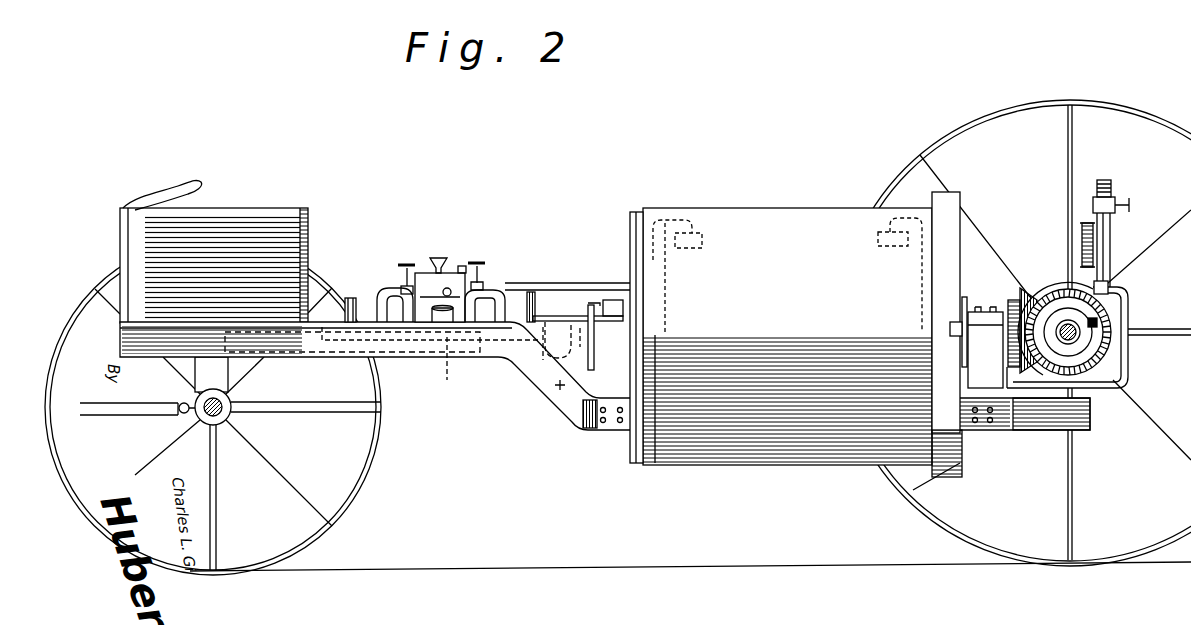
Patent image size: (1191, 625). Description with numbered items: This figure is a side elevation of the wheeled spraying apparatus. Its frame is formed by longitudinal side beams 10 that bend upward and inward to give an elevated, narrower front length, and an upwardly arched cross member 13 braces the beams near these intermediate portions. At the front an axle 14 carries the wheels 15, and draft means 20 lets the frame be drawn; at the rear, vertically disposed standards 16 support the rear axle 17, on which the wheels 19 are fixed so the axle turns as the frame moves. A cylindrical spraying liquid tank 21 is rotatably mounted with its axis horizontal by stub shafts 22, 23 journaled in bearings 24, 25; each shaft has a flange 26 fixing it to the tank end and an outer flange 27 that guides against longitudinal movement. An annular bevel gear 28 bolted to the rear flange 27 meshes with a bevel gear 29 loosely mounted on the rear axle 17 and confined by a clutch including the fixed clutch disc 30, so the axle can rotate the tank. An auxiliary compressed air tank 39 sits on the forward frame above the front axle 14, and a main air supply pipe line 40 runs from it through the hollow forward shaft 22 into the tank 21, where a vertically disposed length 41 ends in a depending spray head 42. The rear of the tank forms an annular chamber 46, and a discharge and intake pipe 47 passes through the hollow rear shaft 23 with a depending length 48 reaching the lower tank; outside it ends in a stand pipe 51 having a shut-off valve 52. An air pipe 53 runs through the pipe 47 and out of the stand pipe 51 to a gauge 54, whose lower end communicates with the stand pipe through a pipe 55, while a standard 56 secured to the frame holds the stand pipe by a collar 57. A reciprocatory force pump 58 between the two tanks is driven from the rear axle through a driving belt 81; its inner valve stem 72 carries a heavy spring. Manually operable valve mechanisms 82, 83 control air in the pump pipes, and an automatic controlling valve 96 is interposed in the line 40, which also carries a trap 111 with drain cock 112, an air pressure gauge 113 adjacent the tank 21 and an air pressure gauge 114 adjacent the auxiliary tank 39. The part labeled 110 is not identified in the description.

The side beam 10 is at (425, 357).
The arched cross member 13 is at (604, 378).
The front axle 14 is at (228, 403).
The front wheels 15 is at (360, 480).
The standards 16 is at (1091, 394).
The rear axle 17 is at (1087, 333).
The rear wheels 19 is at (1133, 112).
The draft means 20 is at (130, 410).
The spraying liquid tank 21 is at (793, 215).
The forward stub shaft 22 is at (612, 300).
The rear stub shaft 23 is at (1018, 313).
The bearing 24 is at (610, 317).
The bearing 25 is at (1014, 300).
The flange 26 is at (626, 330).
The flange 27 is at (588, 307).
The annular bevel gear 28 is at (1030, 300).
The bevel gear 29 is at (1107, 357).
The fixed clutch disc 30 is at (1112, 344).
The auxiliary compressed air tank 39 is at (273, 217).
The main air supply pipe line 40 is at (322, 327).
The vertically disposed length 41 is at (668, 277).
The spray head 42 is at (705, 242).
The annular chamber 46 is at (950, 210).
The discharge and intake pipe 47 is at (1070, 337).
The depending length 48 is at (927, 343).
The stand pipe 51 is at (1102, 233).
The shut-off valve 52 is at (1110, 202).
The air pipe 53 is at (917, 272).
The gauge 54 is at (1087, 232).
The pipe 55 is at (1080, 268).
The standard 56 is at (1124, 376).
The collar 57 is at (1112, 280).
The pump 58 is at (462, 268).
The valve stem 72 is at (962, 440).
The driving belt 81 is at (498, 287).
The valve mechanism 82 is at (397, 288).
The valve mechanism 83 is at (478, 287).
The automatic controlling valve 96 is at (453, 370).
The tank 110 is at (418, 273).
The trap 111 is at (541, 382).
The drain cock 112 is at (543, 384).
The air pressure gauge 113 is at (533, 296).
The air pressure gauge 114 is at (349, 297).